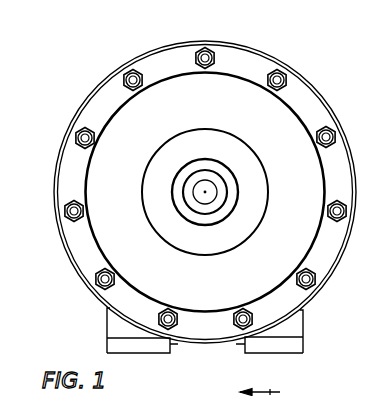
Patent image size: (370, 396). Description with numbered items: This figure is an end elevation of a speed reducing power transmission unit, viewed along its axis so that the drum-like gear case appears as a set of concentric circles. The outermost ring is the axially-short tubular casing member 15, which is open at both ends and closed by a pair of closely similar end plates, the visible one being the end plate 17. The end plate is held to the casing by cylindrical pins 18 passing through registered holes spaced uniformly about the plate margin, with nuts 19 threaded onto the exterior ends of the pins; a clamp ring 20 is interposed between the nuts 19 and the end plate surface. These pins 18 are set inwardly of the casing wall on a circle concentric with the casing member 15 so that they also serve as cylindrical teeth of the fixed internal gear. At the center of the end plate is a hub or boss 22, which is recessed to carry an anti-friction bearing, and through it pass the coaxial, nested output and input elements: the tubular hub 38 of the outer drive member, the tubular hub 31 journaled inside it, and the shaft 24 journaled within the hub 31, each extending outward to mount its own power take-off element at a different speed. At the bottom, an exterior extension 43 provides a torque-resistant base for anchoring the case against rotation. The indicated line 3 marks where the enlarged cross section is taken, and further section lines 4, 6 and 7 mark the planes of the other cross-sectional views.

The tubular casing member 15 is at (287, 64).
The end plate 17 is at (205, 192).
The cylindrical pins 18 is at (131, 69).
The nuts 19 is at (76, 137).
The clamp rings 20 is at (305, 100).
The hub or boss 22 is at (259, 172).
The shaft 24 is at (210, 197).
The tubular hub 31 is at (218, 183).
The tubular hub 38 is at (211, 163).
The exterior extension or projection 43 is at (115, 344).
The section line 3— 3 is at (204, 12).
The section line 4— 4 is at (218, 395).
The section line 6— 6 is at (322, 395).
The section line 7— 7 is at (369, 392).